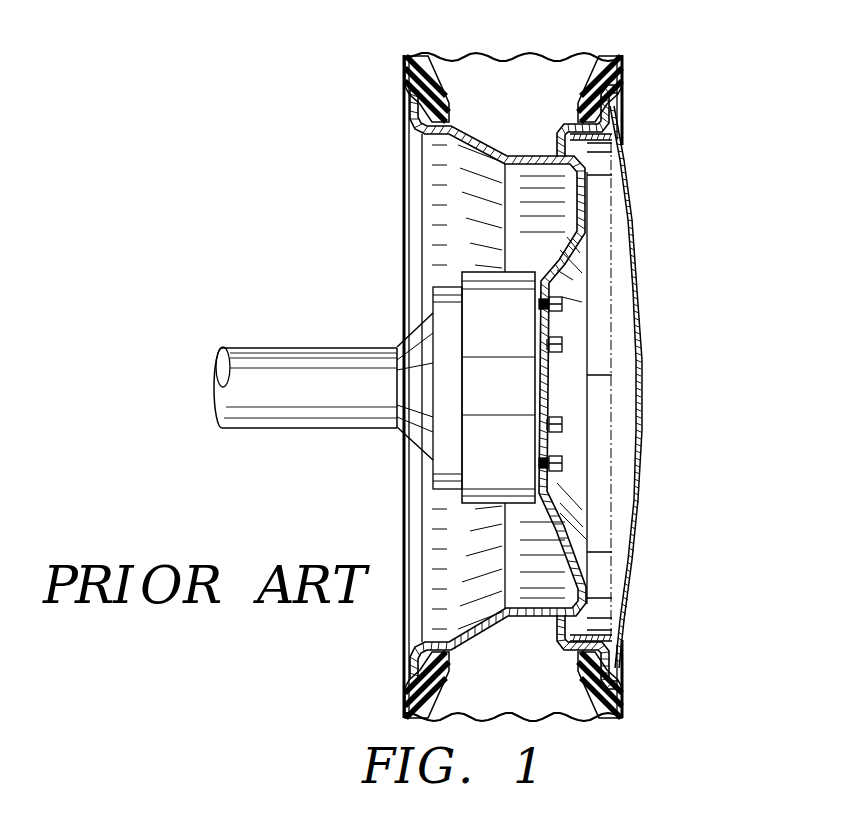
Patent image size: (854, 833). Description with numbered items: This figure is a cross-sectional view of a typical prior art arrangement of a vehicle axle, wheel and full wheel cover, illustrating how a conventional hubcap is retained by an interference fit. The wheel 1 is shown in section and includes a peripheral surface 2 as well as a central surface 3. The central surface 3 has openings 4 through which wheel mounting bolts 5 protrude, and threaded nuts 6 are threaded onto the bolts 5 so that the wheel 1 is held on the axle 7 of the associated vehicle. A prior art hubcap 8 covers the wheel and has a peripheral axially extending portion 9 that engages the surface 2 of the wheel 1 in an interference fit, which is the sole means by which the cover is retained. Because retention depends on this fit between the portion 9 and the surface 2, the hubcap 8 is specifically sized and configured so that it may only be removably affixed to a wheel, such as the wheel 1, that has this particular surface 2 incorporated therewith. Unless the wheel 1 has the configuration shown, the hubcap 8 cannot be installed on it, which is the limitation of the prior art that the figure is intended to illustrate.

The wheel 1 is at (470, 220).
The peripheral surface 2 is at (605, 122).
The central surface 3 is at (548, 500).
The openings 4 is at (548, 443).
The wheel mounting bolts 5 is at (537, 467).
The threaded nuts 6 is at (560, 308).
The axle 7 is at (343, 413).
The hubcap 8 is at (637, 377).
The peripheral axially extending portion 9 is at (570, 125).